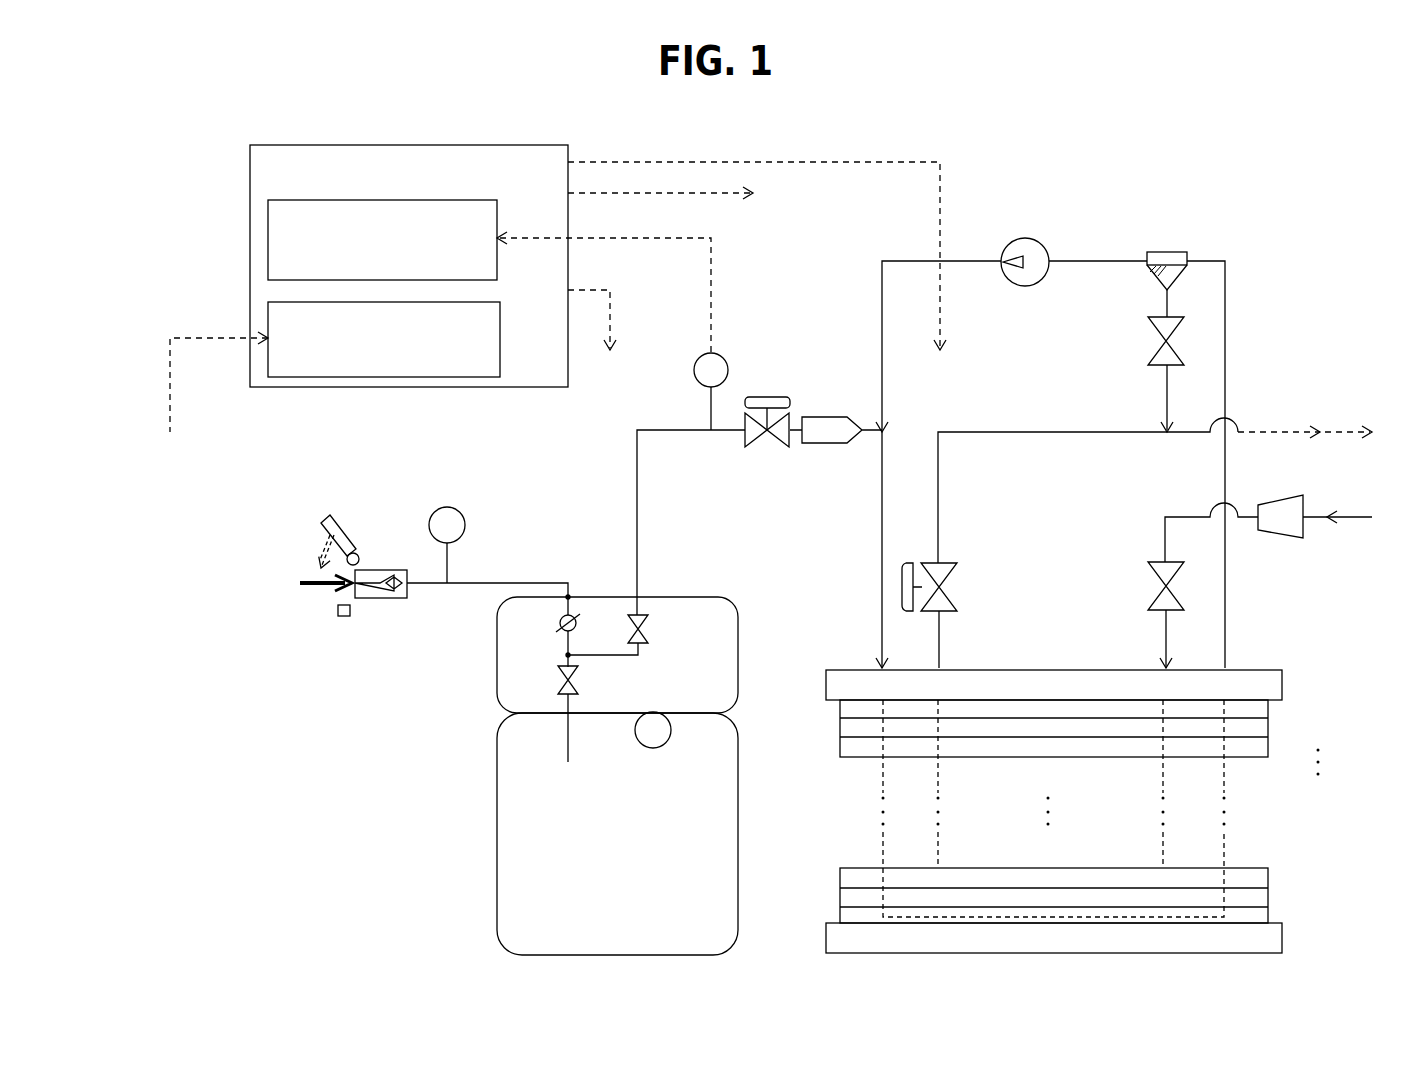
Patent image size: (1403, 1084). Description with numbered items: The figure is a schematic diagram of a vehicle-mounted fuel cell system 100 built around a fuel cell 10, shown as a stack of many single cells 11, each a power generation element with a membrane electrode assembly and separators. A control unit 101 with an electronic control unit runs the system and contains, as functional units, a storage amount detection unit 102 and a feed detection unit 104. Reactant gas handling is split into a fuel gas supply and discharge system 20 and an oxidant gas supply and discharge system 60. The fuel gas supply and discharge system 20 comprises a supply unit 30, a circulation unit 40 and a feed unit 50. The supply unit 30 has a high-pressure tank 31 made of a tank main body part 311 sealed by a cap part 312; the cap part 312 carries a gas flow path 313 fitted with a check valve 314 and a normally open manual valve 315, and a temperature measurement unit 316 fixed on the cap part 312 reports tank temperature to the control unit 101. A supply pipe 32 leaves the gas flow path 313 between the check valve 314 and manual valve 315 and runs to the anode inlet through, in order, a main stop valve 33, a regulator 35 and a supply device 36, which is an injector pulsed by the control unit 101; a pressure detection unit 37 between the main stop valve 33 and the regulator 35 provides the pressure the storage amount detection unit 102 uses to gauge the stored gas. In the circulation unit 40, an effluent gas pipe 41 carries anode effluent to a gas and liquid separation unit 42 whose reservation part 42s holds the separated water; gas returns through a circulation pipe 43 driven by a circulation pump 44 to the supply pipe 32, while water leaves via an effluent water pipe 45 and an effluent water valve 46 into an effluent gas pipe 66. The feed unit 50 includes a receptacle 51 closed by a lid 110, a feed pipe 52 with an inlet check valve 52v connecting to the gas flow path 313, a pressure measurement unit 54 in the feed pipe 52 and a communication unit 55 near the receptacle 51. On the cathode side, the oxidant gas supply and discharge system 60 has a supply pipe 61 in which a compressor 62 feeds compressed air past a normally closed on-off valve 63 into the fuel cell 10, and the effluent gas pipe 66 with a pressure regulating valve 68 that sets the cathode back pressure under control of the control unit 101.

The fuel cell system 100 is at (240, 158).
The control unit 101 is at (250, 247).
The storage amount detection unit 102 is at (480, 200).
The feed detection unit 104 is at (488, 302).
The fuel gas supply and discharge system 20 is at (884, 234).
The circulation unit 40 is at (884, 234).
The supply unit 30 is at (693, 413).
The feed unit 50 is at (280, 476).
The lid 110 is at (351, 520).
The pressure measurement unit 54 is at (455, 509).
The feed pipe 52 is at (483, 583).
The inlet check valve 52v is at (380, 597).
The receptacle 51 is at (362, 600).
The communication unit 55 is at (344, 618).
The tank 31 is at (724, 570).
The cap part 312 is at (740, 628).
The tank main body part 311 is at (703, 855).
The gas flow path 313 is at (563, 648).
The check valve 314 is at (575, 610).
The manual valve 315 is at (560, 680).
The temperature measurement unit 316 is at (650, 748).
The main stop valve 33 is at (650, 630).
The supply pipe 32 is at (633, 498).
The pressure detection unit 37 is at (722, 357).
The regulator 35 is at (770, 397).
The supply device 36 is at (812, 417).
The oxidant gas supply and discharge system 60 is at (984, 404).
The effluent gas pipe 66 is at (1050, 432).
The pressure regulating valve 68 is at (945, 565).
The supply pipe 61 is at (1163, 530).
The on-off valve 63 is at (1150, 558).
The compressor 62 is at (1268, 530).
The fuel cell 10 is at (1250, 664).
The single cell 11 is at (1252, 728).
The circulation pump 44 is at (1021, 238).
The circulation pipe 43 is at (1083, 261).
The gas and liquid separation unit 42 is at (1165, 252).
The reservation part 42s is at (1171, 282).
The effluent water pipe 45 is at (1163, 306).
The effluent water valve 46 is at (1155, 340).
The effluent gas pipe 41 is at (1228, 315).